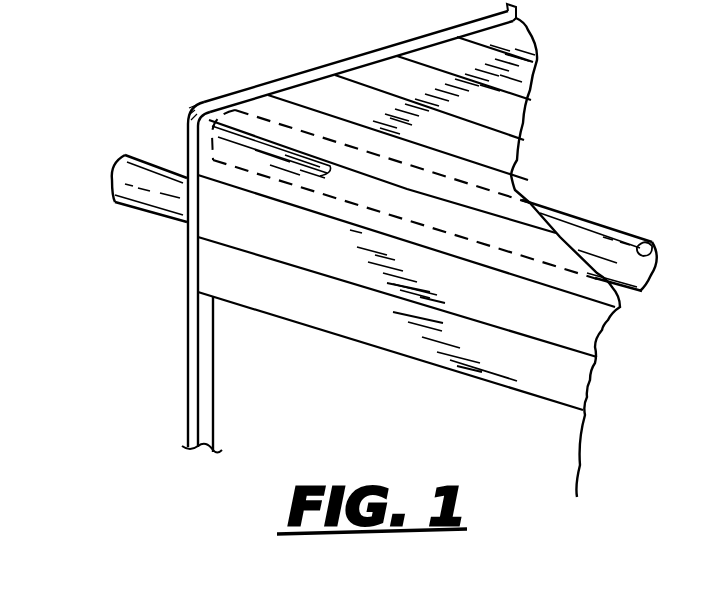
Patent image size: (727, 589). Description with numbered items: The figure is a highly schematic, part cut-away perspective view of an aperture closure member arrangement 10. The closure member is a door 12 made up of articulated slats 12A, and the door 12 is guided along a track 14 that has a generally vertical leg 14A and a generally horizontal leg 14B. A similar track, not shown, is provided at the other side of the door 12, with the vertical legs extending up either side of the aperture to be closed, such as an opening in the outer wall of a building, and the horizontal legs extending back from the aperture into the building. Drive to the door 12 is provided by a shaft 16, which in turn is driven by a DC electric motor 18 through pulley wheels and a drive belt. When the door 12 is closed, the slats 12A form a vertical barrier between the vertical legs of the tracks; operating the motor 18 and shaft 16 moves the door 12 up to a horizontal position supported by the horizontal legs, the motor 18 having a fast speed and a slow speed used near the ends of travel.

The aperture closure member arrangement 10 is at (97, 210).
The door 12 is at (362, 312).
The articulated slats 12A is at (570, 385).
The track 14 is at (168, 342).
The vertical leg 14A is at (206, 410).
The horizontal leg 14B is at (343, 58).
The shaft 16 is at (607, 240).
The DC electric motor 18 is at (156, 176).